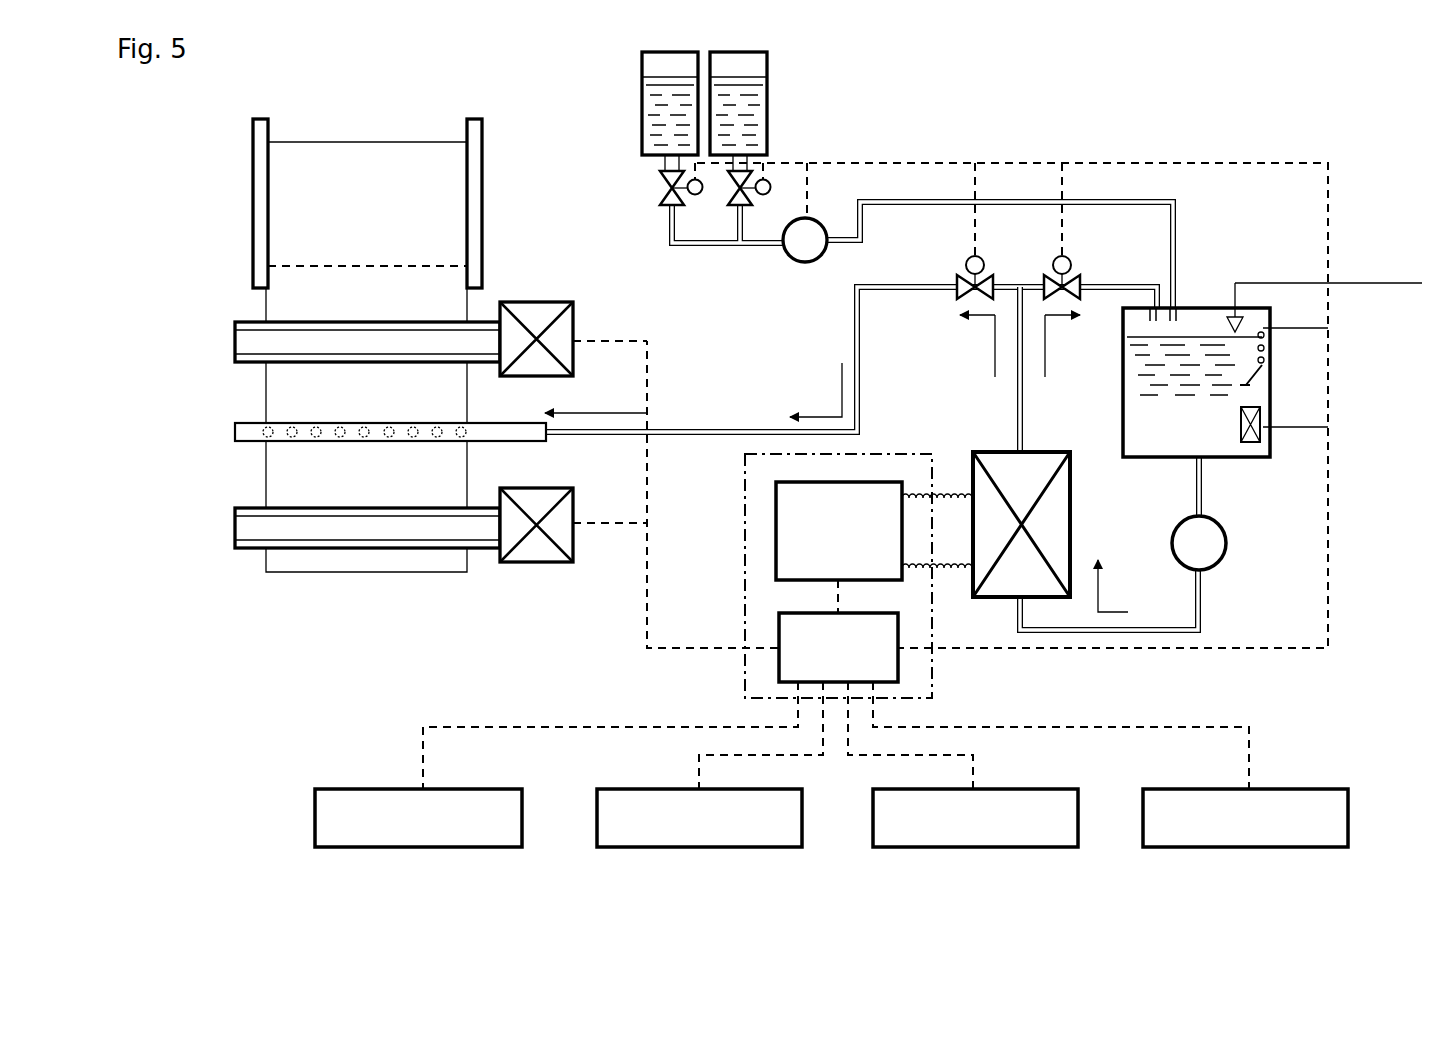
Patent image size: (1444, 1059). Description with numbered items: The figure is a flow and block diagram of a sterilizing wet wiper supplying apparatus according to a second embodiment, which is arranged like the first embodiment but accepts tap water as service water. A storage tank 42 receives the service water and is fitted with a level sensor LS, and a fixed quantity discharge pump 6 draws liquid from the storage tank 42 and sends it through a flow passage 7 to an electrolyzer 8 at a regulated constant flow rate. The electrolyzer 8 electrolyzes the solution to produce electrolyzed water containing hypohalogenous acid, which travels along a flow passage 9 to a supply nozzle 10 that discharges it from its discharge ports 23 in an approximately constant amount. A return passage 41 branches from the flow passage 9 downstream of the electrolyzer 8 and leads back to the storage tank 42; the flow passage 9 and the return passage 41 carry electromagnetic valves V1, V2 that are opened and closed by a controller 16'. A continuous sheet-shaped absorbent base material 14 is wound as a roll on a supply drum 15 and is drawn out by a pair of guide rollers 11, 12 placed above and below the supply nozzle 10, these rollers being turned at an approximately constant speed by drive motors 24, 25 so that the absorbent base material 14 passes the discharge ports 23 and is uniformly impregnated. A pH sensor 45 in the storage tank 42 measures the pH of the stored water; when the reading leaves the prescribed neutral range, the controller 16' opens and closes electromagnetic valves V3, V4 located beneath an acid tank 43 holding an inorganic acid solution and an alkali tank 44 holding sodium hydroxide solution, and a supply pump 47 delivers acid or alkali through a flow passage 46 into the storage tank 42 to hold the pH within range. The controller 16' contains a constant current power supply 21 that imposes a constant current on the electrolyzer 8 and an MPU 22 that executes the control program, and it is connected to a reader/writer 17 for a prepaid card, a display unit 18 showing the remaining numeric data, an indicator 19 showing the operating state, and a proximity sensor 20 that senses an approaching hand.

The fixed quantity discharge pump 6 is at (1228, 544).
The flow passage 7 is at (1201, 605).
The electrolyzer 8 is at (985, 470).
The flow passage 9 is at (727, 429).
The supply nozzle 10 is at (245, 432).
The guide roller 11 is at (248, 340).
The guide roller 12 is at (248, 528).
The absorbent base material 14 is at (362, 566).
The supply drum 15 is at (492, 146).
The controller 16' is at (838, 527).
The reader/writer 17 is at (1249, 848).
The display unit 18 is at (975, 848).
The indicator 19 is at (697, 848).
The proximity sensor 20 is at (423, 848).
The constant current power supply 21 is at (790, 540).
The MPU 22 is at (790, 632).
The discharge ports 23 is at (325, 442).
The drive motor 24 is at (538, 316).
The drive motor 25 is at (540, 552).
The return passage 41 is at (1115, 284).
The storage tank 42 is at (1170, 459).
The acid tank 43 is at (641, 98).
The alkali tank 44 is at (767, 105).
The pH sensor 45 is at (1252, 444).
The flow passage 46 is at (918, 199).
The supply pump 47 is at (793, 262).
The electromagnetic valve V1 is at (964, 305).
The electromagnetic valve V2 is at (1050, 305).
The electromagnetic valve V3 is at (659, 204).
The electromagnetic valve V4 is at (733, 204).
The level sensor LS is at (1284, 377).